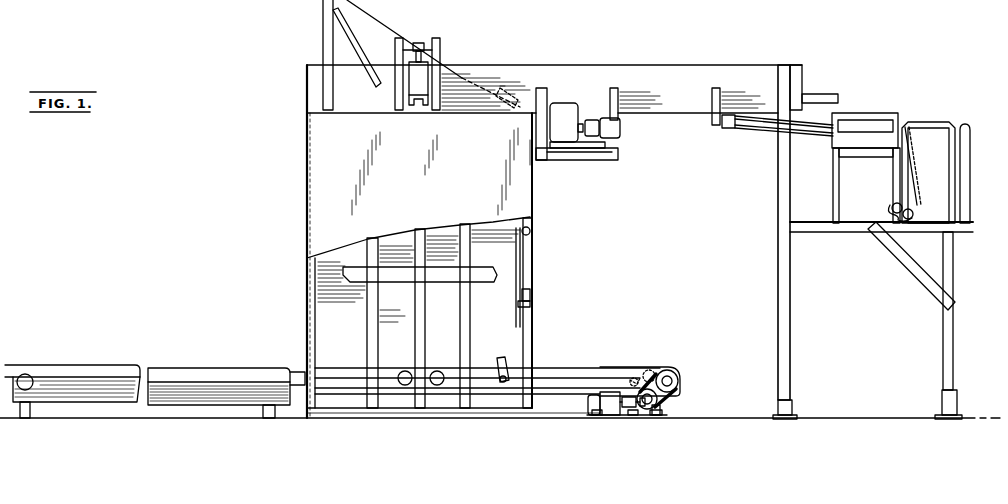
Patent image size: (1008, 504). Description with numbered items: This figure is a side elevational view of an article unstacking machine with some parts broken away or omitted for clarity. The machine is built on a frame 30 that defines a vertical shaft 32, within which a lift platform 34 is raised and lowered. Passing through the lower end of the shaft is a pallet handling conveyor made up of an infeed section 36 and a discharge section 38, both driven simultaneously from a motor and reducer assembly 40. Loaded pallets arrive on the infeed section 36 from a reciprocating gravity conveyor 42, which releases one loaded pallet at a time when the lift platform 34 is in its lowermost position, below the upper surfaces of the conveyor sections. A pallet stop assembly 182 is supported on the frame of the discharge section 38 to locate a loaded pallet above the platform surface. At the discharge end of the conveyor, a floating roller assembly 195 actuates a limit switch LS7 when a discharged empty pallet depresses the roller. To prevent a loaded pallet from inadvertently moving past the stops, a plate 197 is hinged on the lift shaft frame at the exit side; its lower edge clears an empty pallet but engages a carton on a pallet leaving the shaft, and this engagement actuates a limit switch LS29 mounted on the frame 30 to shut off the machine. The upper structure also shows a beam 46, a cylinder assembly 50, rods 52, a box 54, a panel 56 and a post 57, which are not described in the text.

The frame 30 is at (300, 226).
The vertical shaft 32 is at (494, 310).
The lift platform 34 is at (440, 279).
The infeed section 36 is at (343, 366).
The discharge section 38 is at (566, 367).
The motor and reducer assembly 40 is at (604, 412).
The reciprocating gravity conveyor 42 is at (166, 364).
The top beam 46 is at (597, 72).
The cylinder assembly 50 is at (440, 50).
The push rods 52 is at (810, 117).
The box 54 is at (878, 120).
The panel 56 is at (940, 168).
The post 57 is at (298, 0).
The pallet stop assembly 182 is at (496, 358).
The floating roller assembly 195 is at (648, 370).
The plate 197 is at (523, 270).
The limit switch LS29 is at (534, 296).
The limit switch LS7 is at (632, 380).